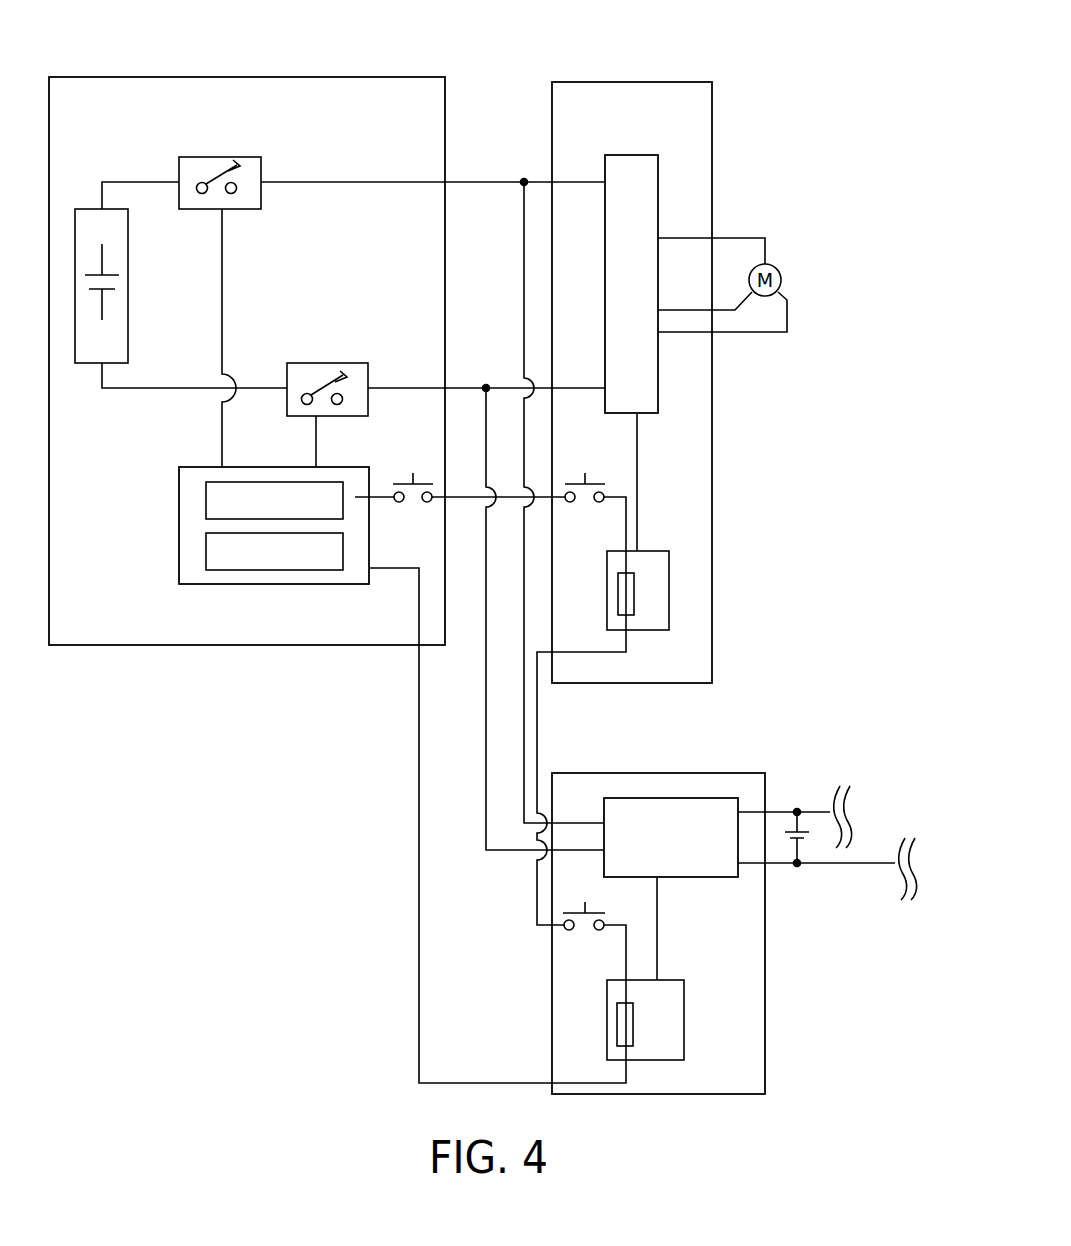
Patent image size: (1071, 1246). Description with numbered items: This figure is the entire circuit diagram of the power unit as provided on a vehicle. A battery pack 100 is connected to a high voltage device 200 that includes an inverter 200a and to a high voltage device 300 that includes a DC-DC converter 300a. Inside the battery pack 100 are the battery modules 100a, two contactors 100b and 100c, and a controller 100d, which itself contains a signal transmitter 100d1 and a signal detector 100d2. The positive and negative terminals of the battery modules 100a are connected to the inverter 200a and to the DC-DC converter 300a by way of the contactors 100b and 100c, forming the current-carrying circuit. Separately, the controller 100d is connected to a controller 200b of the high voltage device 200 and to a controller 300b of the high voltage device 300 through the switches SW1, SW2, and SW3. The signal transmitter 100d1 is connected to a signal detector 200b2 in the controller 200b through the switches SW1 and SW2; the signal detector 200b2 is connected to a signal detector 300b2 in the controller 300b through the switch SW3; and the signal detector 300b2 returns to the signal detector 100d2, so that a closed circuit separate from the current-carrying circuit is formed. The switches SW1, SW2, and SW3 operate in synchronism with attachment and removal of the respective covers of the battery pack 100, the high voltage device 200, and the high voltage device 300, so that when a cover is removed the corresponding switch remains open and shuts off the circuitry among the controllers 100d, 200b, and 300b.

The battery pack 100 is at (252, 77).
The battery modules 100a is at (95, 363).
The contactor 100b is at (232, 157).
The contactor 100c is at (340, 363).
The controller 100d is at (230, 555).
The signal transmitter 100d1 is at (206, 508).
The signal detector 100d2 is at (320, 570).
The high voltage device 200 is at (650, 82).
The inverter 200a is at (626, 155).
The controller 200b is at (697, 558).
The signal detector 200b2 is at (634, 598).
The high voltage device 300 is at (737, 773).
The DC-DC converter 300a is at (648, 798).
The controller 300b is at (683, 988).
The signal detector 300b2 is at (633, 1025).
The switch SW1 is at (417, 471).
The switch SW2 is at (590, 471).
The switch SW3 is at (584, 903).